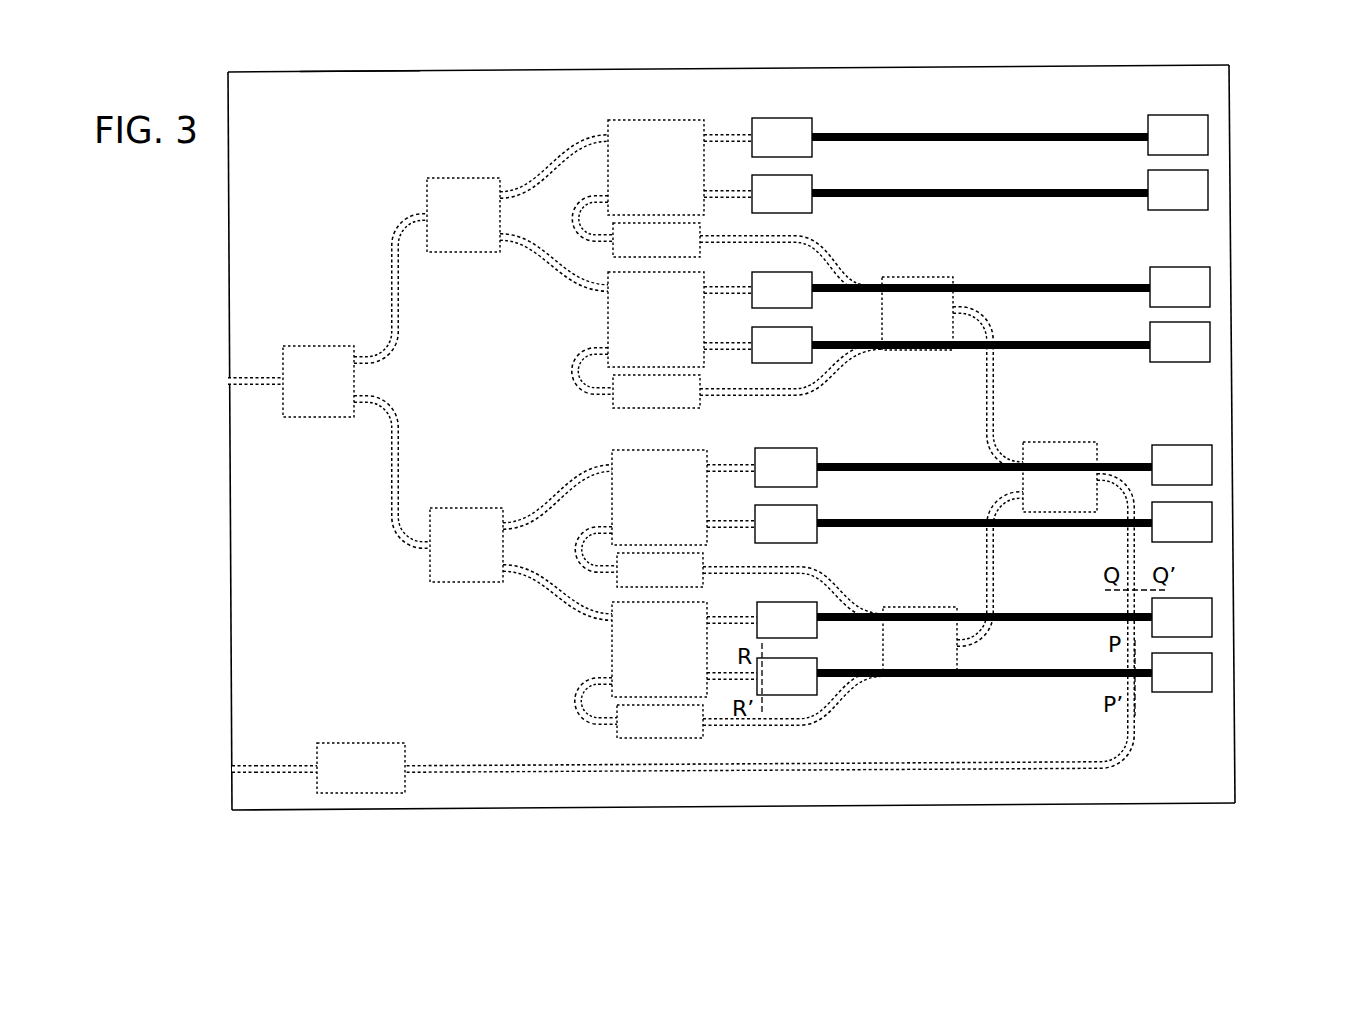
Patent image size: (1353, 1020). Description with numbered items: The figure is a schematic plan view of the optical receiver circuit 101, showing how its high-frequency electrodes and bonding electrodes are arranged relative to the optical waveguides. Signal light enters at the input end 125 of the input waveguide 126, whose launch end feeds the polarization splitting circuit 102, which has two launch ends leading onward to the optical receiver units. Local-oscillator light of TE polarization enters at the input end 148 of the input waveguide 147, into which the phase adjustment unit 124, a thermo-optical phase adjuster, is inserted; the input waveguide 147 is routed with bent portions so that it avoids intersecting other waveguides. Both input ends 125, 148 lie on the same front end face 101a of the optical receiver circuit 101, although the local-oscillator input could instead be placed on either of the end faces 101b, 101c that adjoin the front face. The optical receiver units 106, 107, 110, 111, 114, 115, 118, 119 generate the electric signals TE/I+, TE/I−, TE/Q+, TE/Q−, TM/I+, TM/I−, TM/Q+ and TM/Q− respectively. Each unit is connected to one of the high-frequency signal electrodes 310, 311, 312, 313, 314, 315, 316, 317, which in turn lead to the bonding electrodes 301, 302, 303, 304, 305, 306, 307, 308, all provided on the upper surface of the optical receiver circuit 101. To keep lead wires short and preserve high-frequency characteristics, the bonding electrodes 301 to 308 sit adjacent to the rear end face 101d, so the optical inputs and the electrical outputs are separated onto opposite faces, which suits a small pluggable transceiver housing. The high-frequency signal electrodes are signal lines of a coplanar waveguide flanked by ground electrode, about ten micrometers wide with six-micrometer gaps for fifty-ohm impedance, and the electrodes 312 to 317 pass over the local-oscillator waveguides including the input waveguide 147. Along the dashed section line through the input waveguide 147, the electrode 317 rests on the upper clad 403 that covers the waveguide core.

The optical receiver circuit 101 is at (731, 441).
The end face 101a is at (230, 571).
The end face 101b is at (779, 806).
The end face 101c is at (775, 66).
The end face 101d is at (1234, 272).
The polarization splitting circuit 102 is at (319, 345).
The optical receiver unit 106 is at (763, 153).
The optical receiver unit 107 is at (763, 209).
The optical receiver unit 110 is at (763, 305).
The optical receiver unit 111 is at (763, 360).
The optical receiver unit 114 is at (767, 483).
The optical receiver unit 115 is at (767, 539).
The optical receiver unit 118 is at (768, 635).
The optical receiver unit 119 is at (768, 691).
The phase adjustment unit 124 is at (363, 743).
The input end 125 is at (228, 380).
The input waveguide 126 is at (262, 376).
The input waveguide 147 is at (268, 765).
The input end 148 is at (231, 770).
The bonding electrode 301 is at (1159, 150).
The bonding electrode 302 is at (1159, 205).
The bonding electrode 303 is at (1161, 302).
The bonding electrode 304 is at (1161, 357).
The bonding electrode 305 is at (1163, 480).
The bonding electrode 306 is at (1163, 537).
The bonding electrode 307 is at (1163, 632).
The bonding electrode 308 is at (1163, 687).
The high-frequency signal electrode 310 is at (923, 131).
The high-frequency signal electrode 311 is at (923, 188).
The high-frequency signal electrode 312 is at (1047, 283).
The high-frequency signal electrode 313 is at (1047, 340).
The high-frequency signal electrode 314 is at (926, 462).
The high-frequency signal electrode 315 is at (926, 518).
The high-frequency signal electrode 316 is at (1049, 612).
The high-frequency signal electrode 317 is at (1049, 668).
The upper clad 403 is at (353, 88).